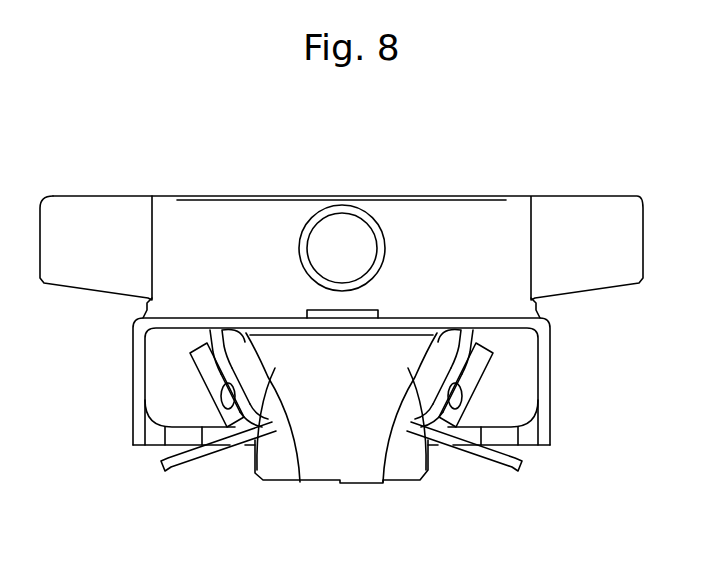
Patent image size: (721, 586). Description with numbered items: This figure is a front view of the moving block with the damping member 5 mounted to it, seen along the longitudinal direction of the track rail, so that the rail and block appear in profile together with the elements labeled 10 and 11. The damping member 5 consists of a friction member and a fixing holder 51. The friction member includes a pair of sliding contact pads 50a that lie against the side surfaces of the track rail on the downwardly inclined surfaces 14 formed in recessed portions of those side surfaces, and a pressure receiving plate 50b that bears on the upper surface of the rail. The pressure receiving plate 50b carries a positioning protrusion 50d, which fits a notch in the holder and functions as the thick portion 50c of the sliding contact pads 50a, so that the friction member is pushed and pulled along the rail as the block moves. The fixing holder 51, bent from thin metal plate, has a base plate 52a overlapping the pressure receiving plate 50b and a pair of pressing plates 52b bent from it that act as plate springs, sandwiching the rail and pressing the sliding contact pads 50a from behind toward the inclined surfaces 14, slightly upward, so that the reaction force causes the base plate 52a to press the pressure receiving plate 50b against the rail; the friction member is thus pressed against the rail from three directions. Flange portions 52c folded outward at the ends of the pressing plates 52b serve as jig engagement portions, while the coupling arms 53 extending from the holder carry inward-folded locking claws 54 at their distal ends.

The damping member 5 is at (199, 304).
The fixing member 10 is at (332, 482).
The housing 11 is at (578, 200).
The inclined surfaces 14 is at (285, 450).
The sliding contact pads 50a is at (427, 380).
The pressure receiving plate 50b is at (395, 325).
The thick portion 50c is at (200, 372).
The positioning protrusion 50d is at (340, 313).
The fixing holder 51 is at (456, 309).
The base plate 52a is at (240, 207).
The pressing plates 52b is at (238, 440).
The flange portions 52c is at (170, 470).
The coupling arms 53 is at (142, 390).
The locking claws 54 is at (153, 440).